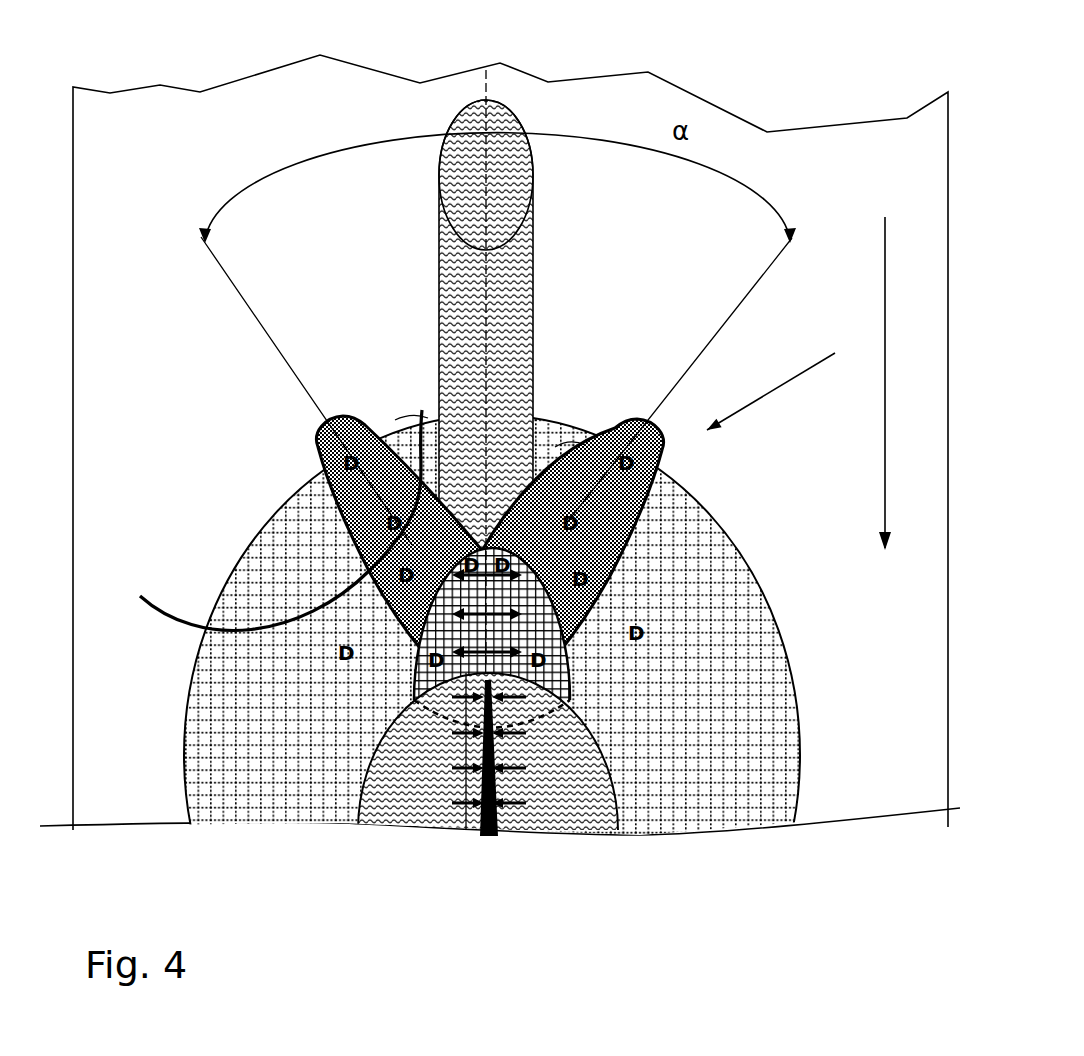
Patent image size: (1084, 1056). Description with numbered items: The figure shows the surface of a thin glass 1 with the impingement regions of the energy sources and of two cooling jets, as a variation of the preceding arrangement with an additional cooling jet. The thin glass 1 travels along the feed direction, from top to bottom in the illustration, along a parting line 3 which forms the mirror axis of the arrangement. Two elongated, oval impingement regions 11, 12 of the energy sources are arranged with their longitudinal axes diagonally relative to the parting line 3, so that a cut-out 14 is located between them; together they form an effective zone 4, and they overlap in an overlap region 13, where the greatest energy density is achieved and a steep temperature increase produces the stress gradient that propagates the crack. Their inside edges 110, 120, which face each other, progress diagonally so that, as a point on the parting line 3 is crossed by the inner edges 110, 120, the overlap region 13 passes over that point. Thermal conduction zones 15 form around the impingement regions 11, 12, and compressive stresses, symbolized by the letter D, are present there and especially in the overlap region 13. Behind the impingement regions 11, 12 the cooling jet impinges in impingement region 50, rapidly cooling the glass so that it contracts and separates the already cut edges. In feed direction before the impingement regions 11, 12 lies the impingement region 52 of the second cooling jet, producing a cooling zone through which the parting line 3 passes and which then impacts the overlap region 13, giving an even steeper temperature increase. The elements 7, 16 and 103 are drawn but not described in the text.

The thin glass 1 is at (181, 153).
The parting line 3 is at (478, 358).
The effective zone 4 is at (777, 378).
The seed / solidification front 7 is at (497, 778).
The impingement region 11 is at (380, 412).
The impingement region 12 is at (607, 413).
The overlap region 13 is at (545, 640).
The cut-out 14 is at (267, 520).
The thermal conduction zone 15 is at (225, 558).
The heater element 16 is at (537, 258).
The impingement region of the cooling jet 50 is at (617, 782).
The impingement region of the second cooling jet 52 is at (450, 125).
The pulling direction 103 is at (883, 243).
The inside edge 110 is at (400, 417).
The inside edge 120 is at (552, 447).